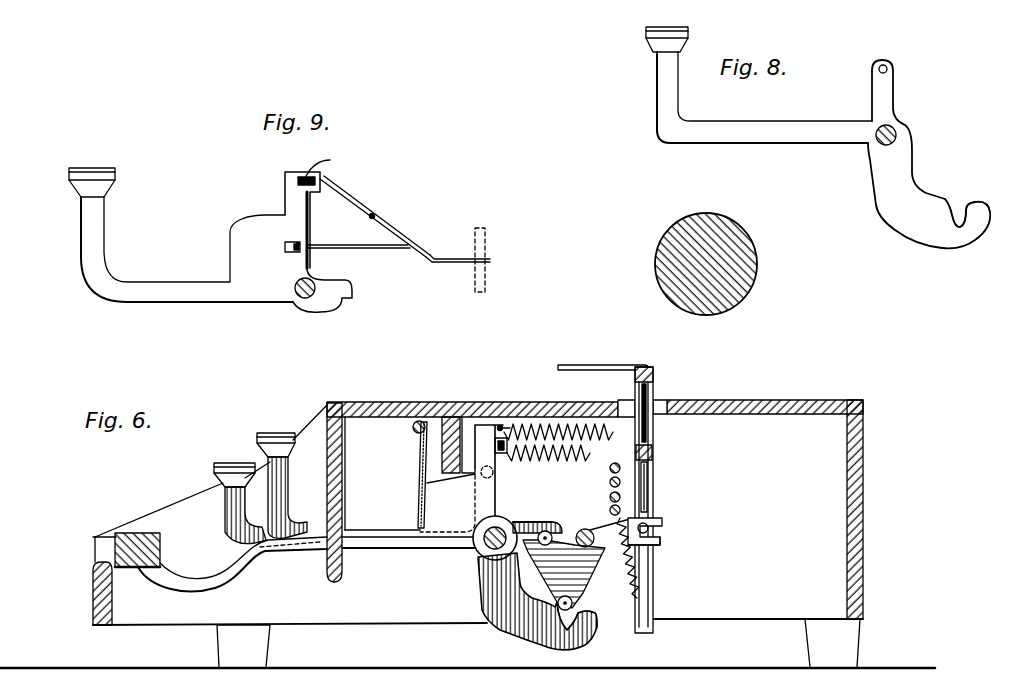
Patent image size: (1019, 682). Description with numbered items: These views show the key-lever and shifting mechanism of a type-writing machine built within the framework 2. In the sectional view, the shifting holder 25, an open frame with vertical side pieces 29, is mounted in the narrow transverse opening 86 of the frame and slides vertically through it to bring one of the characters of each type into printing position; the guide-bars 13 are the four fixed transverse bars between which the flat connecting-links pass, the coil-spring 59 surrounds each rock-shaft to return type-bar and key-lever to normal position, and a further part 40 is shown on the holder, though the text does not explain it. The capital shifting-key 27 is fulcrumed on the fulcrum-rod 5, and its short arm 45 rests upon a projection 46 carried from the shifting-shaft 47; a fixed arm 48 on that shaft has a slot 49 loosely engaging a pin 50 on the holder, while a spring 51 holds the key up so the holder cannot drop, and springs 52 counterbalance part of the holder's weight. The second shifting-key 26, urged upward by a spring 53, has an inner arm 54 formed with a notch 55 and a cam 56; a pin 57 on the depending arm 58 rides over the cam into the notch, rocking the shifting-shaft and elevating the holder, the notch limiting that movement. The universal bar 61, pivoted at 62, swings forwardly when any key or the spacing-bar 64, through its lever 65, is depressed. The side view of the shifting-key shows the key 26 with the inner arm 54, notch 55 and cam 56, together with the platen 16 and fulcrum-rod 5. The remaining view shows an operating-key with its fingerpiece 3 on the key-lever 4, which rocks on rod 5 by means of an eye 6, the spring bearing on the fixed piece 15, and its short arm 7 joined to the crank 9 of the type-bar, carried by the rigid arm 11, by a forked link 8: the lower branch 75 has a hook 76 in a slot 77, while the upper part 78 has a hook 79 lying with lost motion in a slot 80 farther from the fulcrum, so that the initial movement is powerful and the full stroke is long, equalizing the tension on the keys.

In FIG. 6, the framework 2 is at (93, 597).
In FIG. 9, the fingerpiece 3 is at (73, 186).
In FIG. 9, the key-lever 4 is at (186, 277).
In FIG. 9, the fulcrum-rod 5 is at (302, 296).
In FIG. 8, the fulcrum-rod 5 is at (892, 126).
In FIG. 6, the fulcrum-rod 5 is at (500, 528).
In FIG. 6, the eye 6 is at (470, 556).
In FIG. 9, the short arm 7 is at (283, 190).
In FIG. 9, the link 8 is at (440, 258).
In FIG. 9, the crank 9 is at (486, 248).
In FIG. 6, the crank 9 is at (655, 495).
In FIG. 6, the rigid arm 11 is at (579, 365).
In FIG. 6, the guide-bars 13 is at (609, 471).
In FIG. 9, the fixed piece 15 is at (355, 290).
In FIG. 8, the platen 16 is at (758, 257).
In FIG. 6, the holder 25 is at (655, 378).
In FIG. 8, the shifting-key 26 is at (645, 32).
In FIG. 6, the shifting-key 26 is at (268, 435).
In FIG. 6, the shifting-key 27 is at (223, 469).
In FIG. 6, the side piece 29 is at (653, 605).
In FIG. 6, the plunger 40 is at (650, 433).
In FIG. 6, the short arm 45 is at (540, 522).
In FIG. 6, the projection 46 is at (543, 546).
In FIG. 6, the shifting-shaft 47 is at (585, 529).
In FIG. 6, the fixed arm 48 is at (615, 540).
In FIG. 6, the slot 49 is at (662, 541).
In FIG. 6, the pin 50 is at (664, 527).
In FIG. 6, the spring 51 is at (521, 421).
In FIG. 6, the spring 52 is at (645, 564).
In FIG. 6, the spring 53 is at (558, 448).
In FIG. 8, the inner arm 54 is at (900, 205).
In FIG. 6, the inner arm 54 is at (500, 610).
In FIG. 8, the notch 55 is at (987, 201).
In FIG. 6, the notch 55 is at (592, 617).
In FIG. 8, the cam 56 is at (947, 199).
In FIG. 6, the cam 56 is at (545, 583).
In FIG. 6, the pin 57 is at (573, 602).
In FIG. 6, the arm 58 is at (585, 582).
In FIG. 6, the coil-spring 59 is at (652, 446).
In FIG. 6, the universal bar 61 is at (418, 509).
In FIG. 6, the pivot 62 is at (412, 429).
In FIG. 6, the spacing-bar 64 is at (128, 535).
In FIG. 6, the lever 65 is at (222, 580).
In FIG. 9, the lower branch 75 is at (366, 251).
In FIG. 9, the hook 76 is at (297, 243).
In FIG. 9, the slot 77 is at (285, 249).
In FIG. 9, the upper part 78 is at (361, 210).
In FIG. 9, the hook 79 is at (329, 167).
In FIG. 9, the slot 80 is at (300, 177).
In FIG. 6, the opening 86 is at (626, 405).